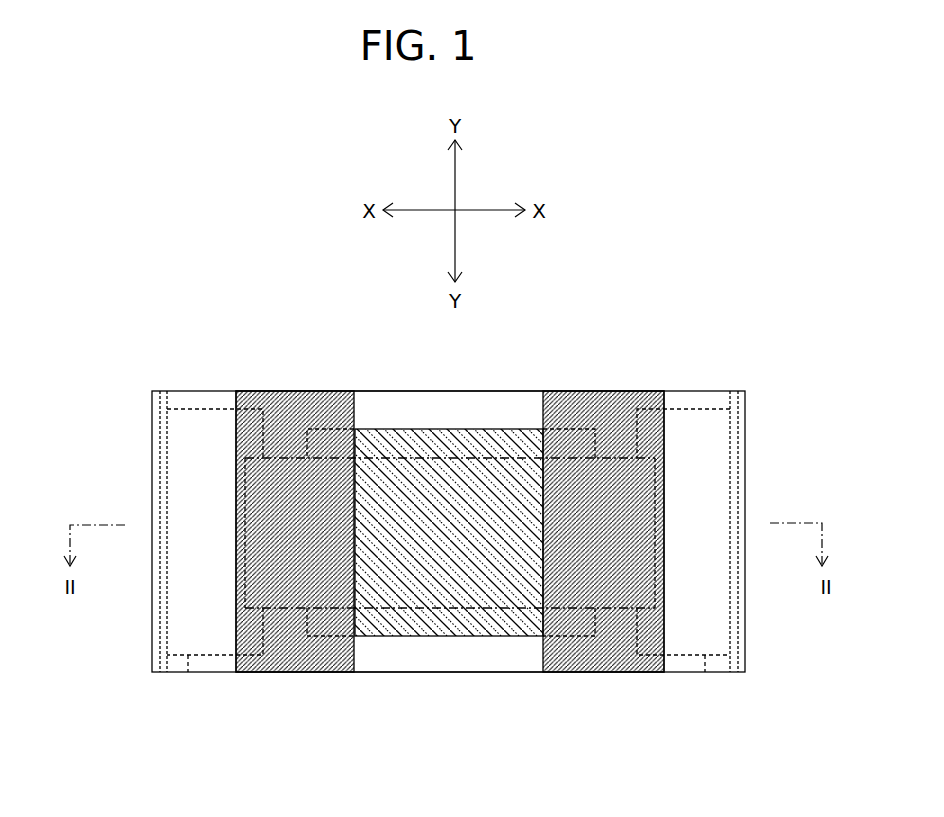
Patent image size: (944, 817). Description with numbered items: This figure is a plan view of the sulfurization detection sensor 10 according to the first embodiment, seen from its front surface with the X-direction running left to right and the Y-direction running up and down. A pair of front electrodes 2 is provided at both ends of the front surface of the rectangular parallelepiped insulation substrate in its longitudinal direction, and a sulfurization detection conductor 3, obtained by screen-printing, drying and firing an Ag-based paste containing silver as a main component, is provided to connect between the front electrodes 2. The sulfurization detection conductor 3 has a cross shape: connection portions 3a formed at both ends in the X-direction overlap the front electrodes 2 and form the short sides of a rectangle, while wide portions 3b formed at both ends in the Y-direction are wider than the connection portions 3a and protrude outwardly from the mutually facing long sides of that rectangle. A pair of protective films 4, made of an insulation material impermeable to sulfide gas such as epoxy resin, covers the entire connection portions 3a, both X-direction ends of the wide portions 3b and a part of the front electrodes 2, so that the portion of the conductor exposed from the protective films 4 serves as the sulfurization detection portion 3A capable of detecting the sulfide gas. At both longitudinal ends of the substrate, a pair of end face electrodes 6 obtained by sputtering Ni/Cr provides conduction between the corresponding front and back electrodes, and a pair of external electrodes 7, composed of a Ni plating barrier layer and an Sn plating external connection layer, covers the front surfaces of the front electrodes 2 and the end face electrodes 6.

The sulfurization detection sensor 10 is at (745, 360).
The sulfurization detection conductor 3 is at (450, 531).
The sulfurization detection portion 3A is at (407, 570).
The connection portions 3a is at (297, 614).
The wide portions 3b is at (487, 435).
The protective films 4 is at (305, 410).
The end face electrodes 6 is at (152, 458).
The external electrodes 7 is at (200, 427).
The front electrodes 2 is at (188, 672).